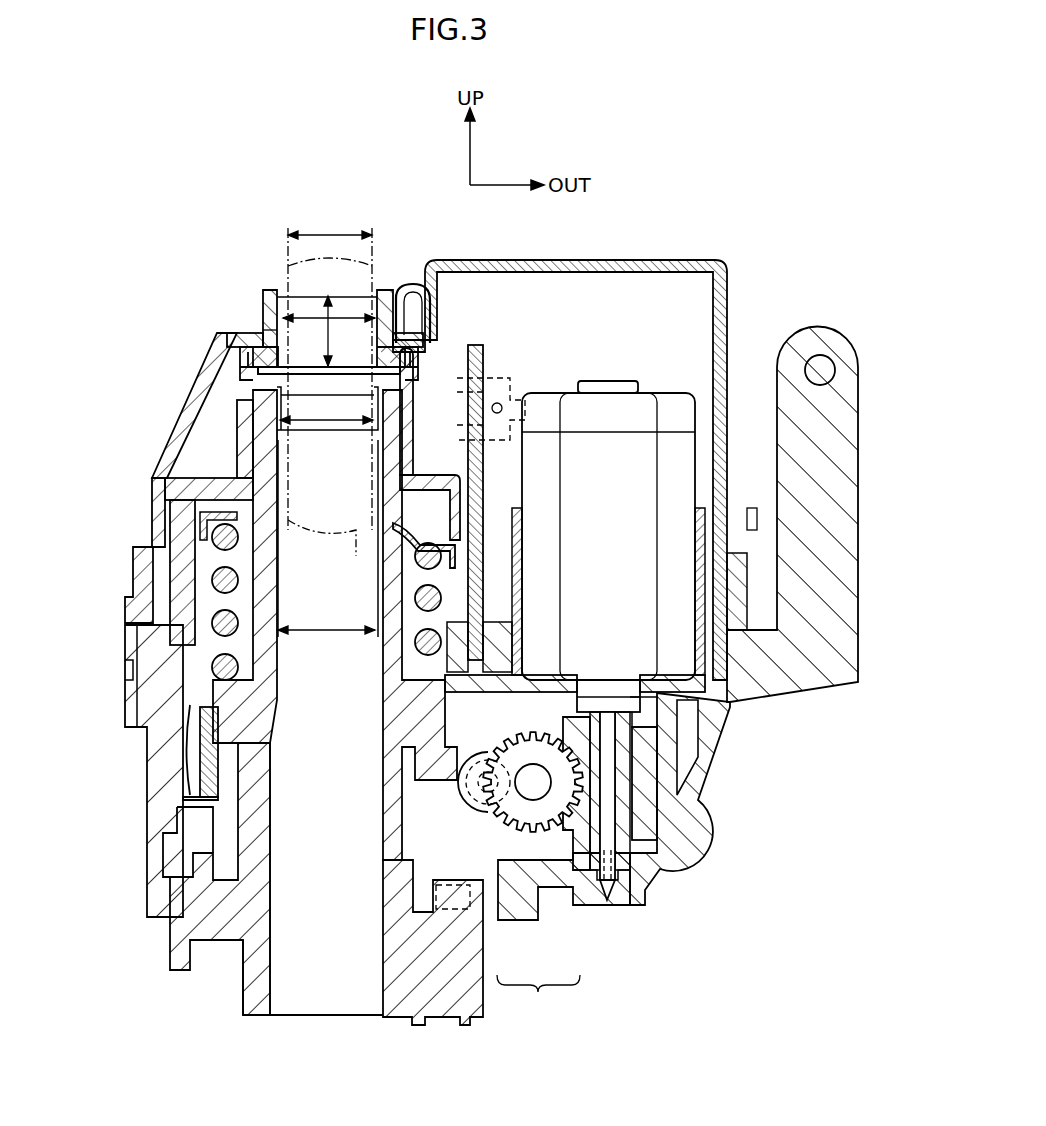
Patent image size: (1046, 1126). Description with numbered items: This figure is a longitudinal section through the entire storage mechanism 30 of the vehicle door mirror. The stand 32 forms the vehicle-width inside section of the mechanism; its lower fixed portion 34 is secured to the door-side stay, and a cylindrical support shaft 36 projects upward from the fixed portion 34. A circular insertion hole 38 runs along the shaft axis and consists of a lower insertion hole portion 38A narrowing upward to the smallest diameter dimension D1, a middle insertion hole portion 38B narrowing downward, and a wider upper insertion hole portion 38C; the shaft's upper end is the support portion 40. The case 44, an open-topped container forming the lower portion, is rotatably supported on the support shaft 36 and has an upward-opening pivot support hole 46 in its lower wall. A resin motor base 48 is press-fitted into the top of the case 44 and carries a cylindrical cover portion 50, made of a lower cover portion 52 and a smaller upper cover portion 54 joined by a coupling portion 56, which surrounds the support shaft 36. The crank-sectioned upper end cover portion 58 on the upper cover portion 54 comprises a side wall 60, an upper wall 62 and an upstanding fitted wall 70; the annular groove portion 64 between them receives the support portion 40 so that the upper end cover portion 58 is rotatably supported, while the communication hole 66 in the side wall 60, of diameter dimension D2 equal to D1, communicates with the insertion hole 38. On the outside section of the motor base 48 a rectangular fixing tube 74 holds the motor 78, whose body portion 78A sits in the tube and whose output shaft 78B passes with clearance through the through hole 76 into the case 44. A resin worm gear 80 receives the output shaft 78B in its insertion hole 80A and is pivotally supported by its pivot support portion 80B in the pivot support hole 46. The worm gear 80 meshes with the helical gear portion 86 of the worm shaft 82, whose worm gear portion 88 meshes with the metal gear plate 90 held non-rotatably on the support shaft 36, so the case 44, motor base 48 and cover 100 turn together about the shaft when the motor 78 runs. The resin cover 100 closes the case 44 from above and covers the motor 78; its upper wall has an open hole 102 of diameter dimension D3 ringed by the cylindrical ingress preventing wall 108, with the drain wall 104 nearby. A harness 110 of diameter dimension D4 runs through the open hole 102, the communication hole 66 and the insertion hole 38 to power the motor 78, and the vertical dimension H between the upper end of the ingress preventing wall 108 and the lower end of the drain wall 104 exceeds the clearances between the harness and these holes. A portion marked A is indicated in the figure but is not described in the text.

The storage mechanism 30 is at (260, 272).
The stand 32 is at (160, 952).
The fixed portion 34 is at (242, 995).
The support shaft 36 is at (215, 603).
The insertion hole 38 is at (380, 995).
The lower insertion hole portion 38A is at (272, 868).
The middle insertion hole portion 38B is at (290, 472).
The upper insertion hole portion 38C is at (233, 431).
The support portion 40 is at (240, 384).
The case 44 is at (143, 782).
The pivot support hole 46 is at (627, 872).
The motor base 48 is at (243, 422).
The cover portion 50 is at (237, 464).
The lower cover portion 52 is at (158, 512).
The upper cover portion 54 is at (414, 395).
The coupling portion 56 is at (447, 478).
The upper end cover portion 58 is at (372, 402).
The side wall 60 is at (371, 476).
The upper wall 62 is at (315, 366).
The groove portion 64 is at (485, 366).
The communication hole 66 is at (283, 393).
The fitted wall 70 is at (420, 352).
The fixing tube 74 is at (728, 495).
The through hole 76 is at (607, 700).
The motor 78 is at (555, 383).
The body portion 78A is at (660, 392).
The output shaft 78B is at (632, 730).
The worm gear 80 is at (642, 820).
The insertion hole 80A is at (610, 712).
The pivot support portion 80B is at (585, 875).
The worm shaft 82 is at (538, 994).
The helical gear portion 86 is at (553, 830).
The worm gear portion 88 is at (478, 832).
The gear plate 90 is at (198, 743).
The cover 100 is at (722, 258).
The open hole 102 is at (262, 328).
The drain wall 104 is at (235, 344).
The ingress preventing wall 108 is at (262, 292).
The harness 110 is at (356, 558).
The lip portion A is at (424, 283).
The dimension H is at (356, 265).
The smallest diameter dimension D1 is at (330, 634).
The diameter dimension of the communication hole D2 is at (323, 425).
The diameter dimension of the open hole D3 is at (312, 322).
The diameter dimension of the harness D4 is at (330, 233).